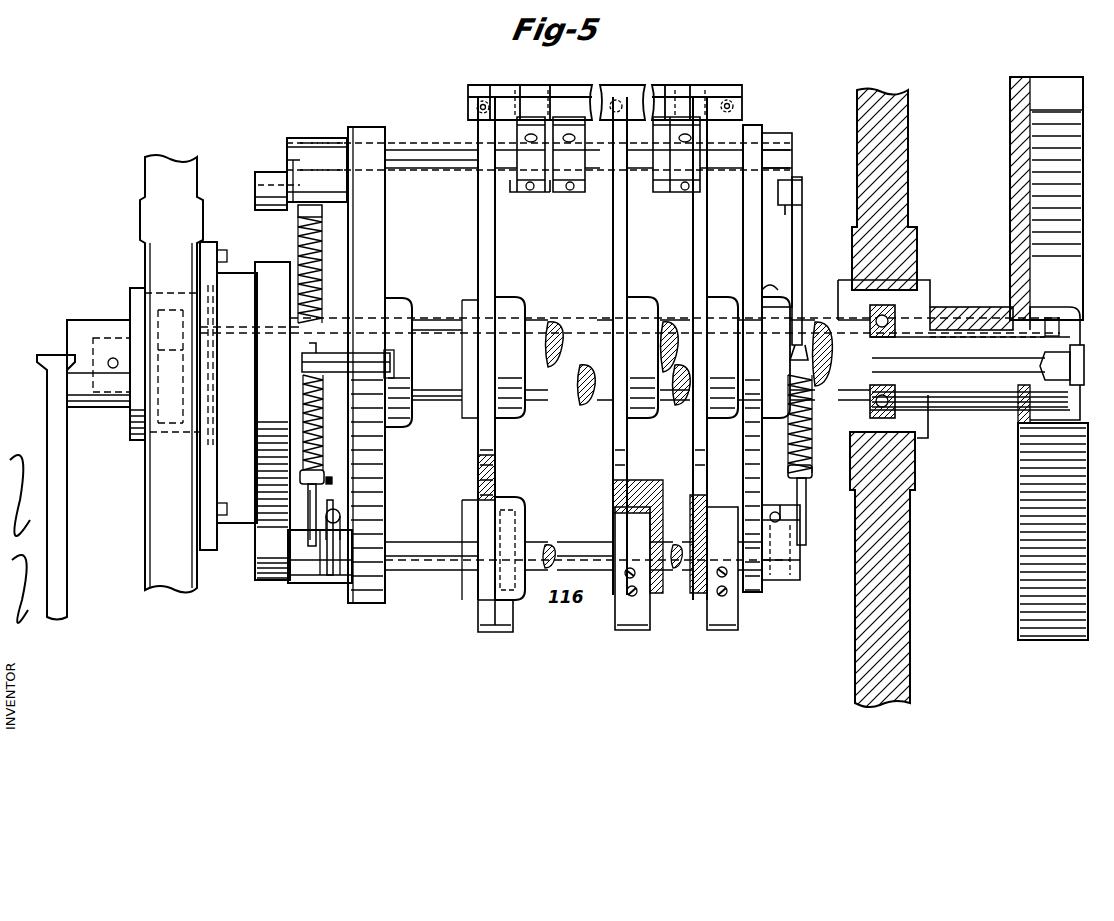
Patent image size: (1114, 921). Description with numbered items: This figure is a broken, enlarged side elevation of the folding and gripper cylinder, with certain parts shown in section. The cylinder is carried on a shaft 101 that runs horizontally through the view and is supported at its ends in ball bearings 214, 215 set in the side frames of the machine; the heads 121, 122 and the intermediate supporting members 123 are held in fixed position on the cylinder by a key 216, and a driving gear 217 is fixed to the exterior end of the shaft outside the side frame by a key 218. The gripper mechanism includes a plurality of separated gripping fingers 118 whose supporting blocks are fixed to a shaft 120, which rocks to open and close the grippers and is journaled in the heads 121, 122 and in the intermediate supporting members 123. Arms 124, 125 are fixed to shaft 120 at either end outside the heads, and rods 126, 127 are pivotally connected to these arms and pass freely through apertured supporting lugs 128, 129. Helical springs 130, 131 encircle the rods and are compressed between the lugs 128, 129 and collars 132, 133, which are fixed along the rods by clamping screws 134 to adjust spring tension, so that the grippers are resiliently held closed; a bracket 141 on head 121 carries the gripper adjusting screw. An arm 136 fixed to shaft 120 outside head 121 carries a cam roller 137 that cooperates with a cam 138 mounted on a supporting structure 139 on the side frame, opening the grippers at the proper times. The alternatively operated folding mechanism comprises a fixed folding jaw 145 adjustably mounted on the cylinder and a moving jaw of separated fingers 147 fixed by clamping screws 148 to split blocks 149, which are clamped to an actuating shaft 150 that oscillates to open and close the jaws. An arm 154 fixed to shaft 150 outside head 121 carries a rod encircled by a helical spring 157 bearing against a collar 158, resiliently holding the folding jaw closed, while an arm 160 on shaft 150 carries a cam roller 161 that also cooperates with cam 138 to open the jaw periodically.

The shaft 101 is at (551, 403).
The gripping fingers 118 is at (625, 632).
The shaft 120 is at (455, 572).
The head 121 is at (370, 603).
The head 122 is at (758, 592).
The intermediate supporting members 123 is at (613, 455).
The arm 124 is at (322, 560).
The arm 125 is at (796, 550).
The rod 126 is at (330, 500).
The rod 127 is at (806, 505).
The supporting lug 128 is at (330, 353).
The supporting lug 129 is at (805, 345).
The helical spring 130 is at (318, 445).
The helical spring 131 is at (810, 440).
The collar 132 is at (322, 472).
The collar 133 is at (808, 478).
The clamping screws 134 is at (333, 480).
The arm 136 is at (310, 580).
The cam roller 137 is at (300, 562).
The cam 138 is at (268, 268).
The supporting structure 139 is at (236, 278).
The bracket 141 is at (345, 520).
The folding jaw 145 is at (505, 87).
The fingers 147 is at (690, 88).
The clamping screw 148 is at (570, 190).
The split blocks 149 is at (677, 192).
The actuating shaft 150 is at (440, 150).
The arm 154 is at (318, 138).
The helical spring 157 is at (322, 258).
The collar 158 is at (330, 217).
The arm 160 is at (290, 155).
The cam roller 161 is at (275, 175).
The ball bearing 214 is at (160, 320).
The ball bearing 215 is at (893, 312).
The key 216 is at (548, 325).
The driving gear 217 is at (1025, 490).
The key 218 is at (1000, 330).